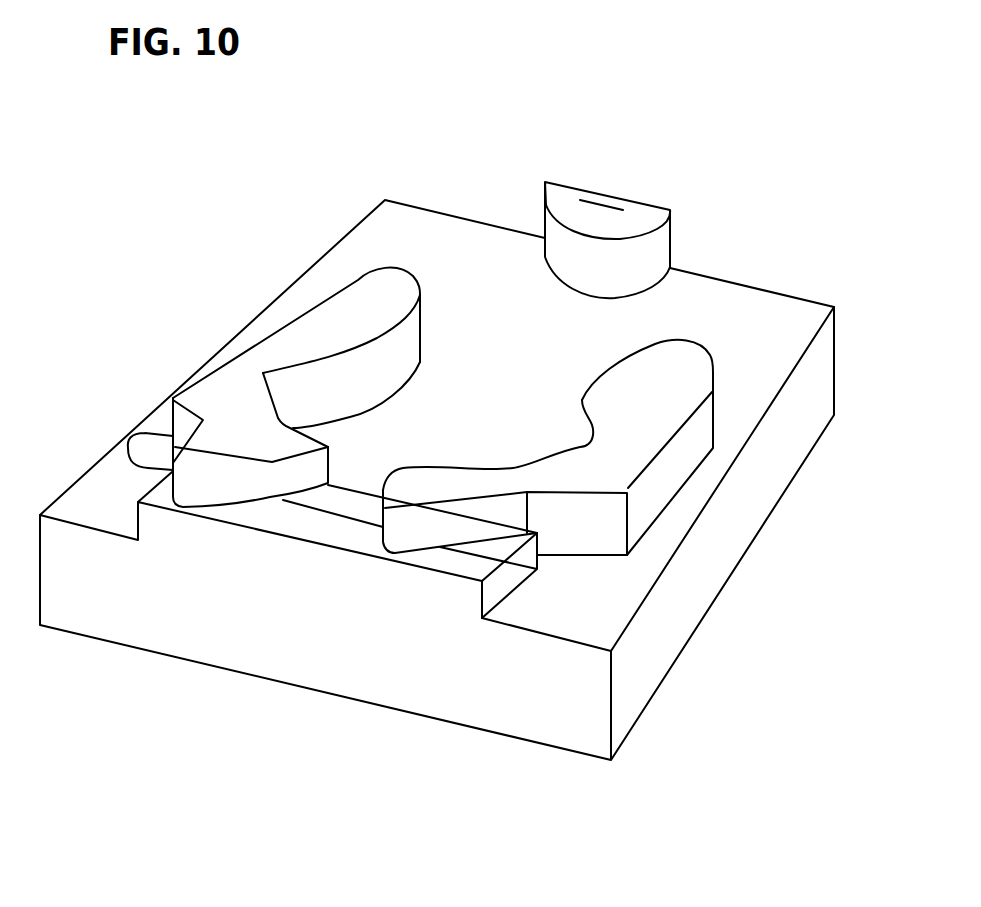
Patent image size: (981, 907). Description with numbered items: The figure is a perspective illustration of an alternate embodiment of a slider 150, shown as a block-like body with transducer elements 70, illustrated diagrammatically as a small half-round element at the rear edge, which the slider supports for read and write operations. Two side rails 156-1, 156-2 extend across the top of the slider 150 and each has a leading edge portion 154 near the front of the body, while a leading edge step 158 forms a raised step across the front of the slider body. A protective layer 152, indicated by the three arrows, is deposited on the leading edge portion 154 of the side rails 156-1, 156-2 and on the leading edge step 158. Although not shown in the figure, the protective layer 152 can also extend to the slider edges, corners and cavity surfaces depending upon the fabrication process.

The slider 150 is at (701, 197).
The transducer elements 70 is at (601, 204).
The protective layer 152 is at (410, 502).
The leading edge portion 154 is at (142, 443).
The side rail 156-1 is at (351, 322).
The side rail 156-2 is at (683, 366).
The leading edge step 158 is at (337, 533).